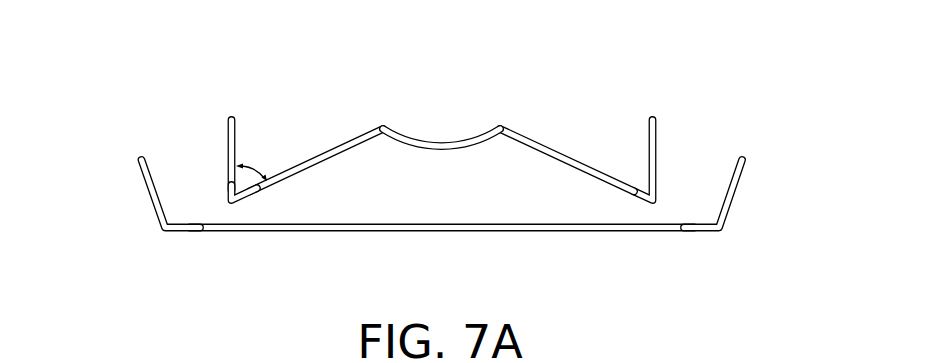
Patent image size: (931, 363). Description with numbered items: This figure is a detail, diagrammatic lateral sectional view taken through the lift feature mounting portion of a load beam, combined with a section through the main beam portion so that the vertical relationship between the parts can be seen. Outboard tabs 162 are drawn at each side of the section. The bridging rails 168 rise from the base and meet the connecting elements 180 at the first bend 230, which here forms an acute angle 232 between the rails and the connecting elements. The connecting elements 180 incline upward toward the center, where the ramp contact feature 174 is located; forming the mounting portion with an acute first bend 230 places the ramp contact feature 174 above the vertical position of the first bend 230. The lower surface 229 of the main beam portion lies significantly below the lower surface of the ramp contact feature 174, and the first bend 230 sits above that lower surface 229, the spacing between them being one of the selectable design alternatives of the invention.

The tabs 162 is at (152, 206).
The bridging rails 168 is at (228, 152).
The ramp contact feature 174 is at (441, 150).
The connecting elements 180 is at (318, 157).
The lower surface of the main beam portion 229 is at (623, 231).
The first bend 230 is at (232, 200).
The acute angle 232 is at (254, 169).